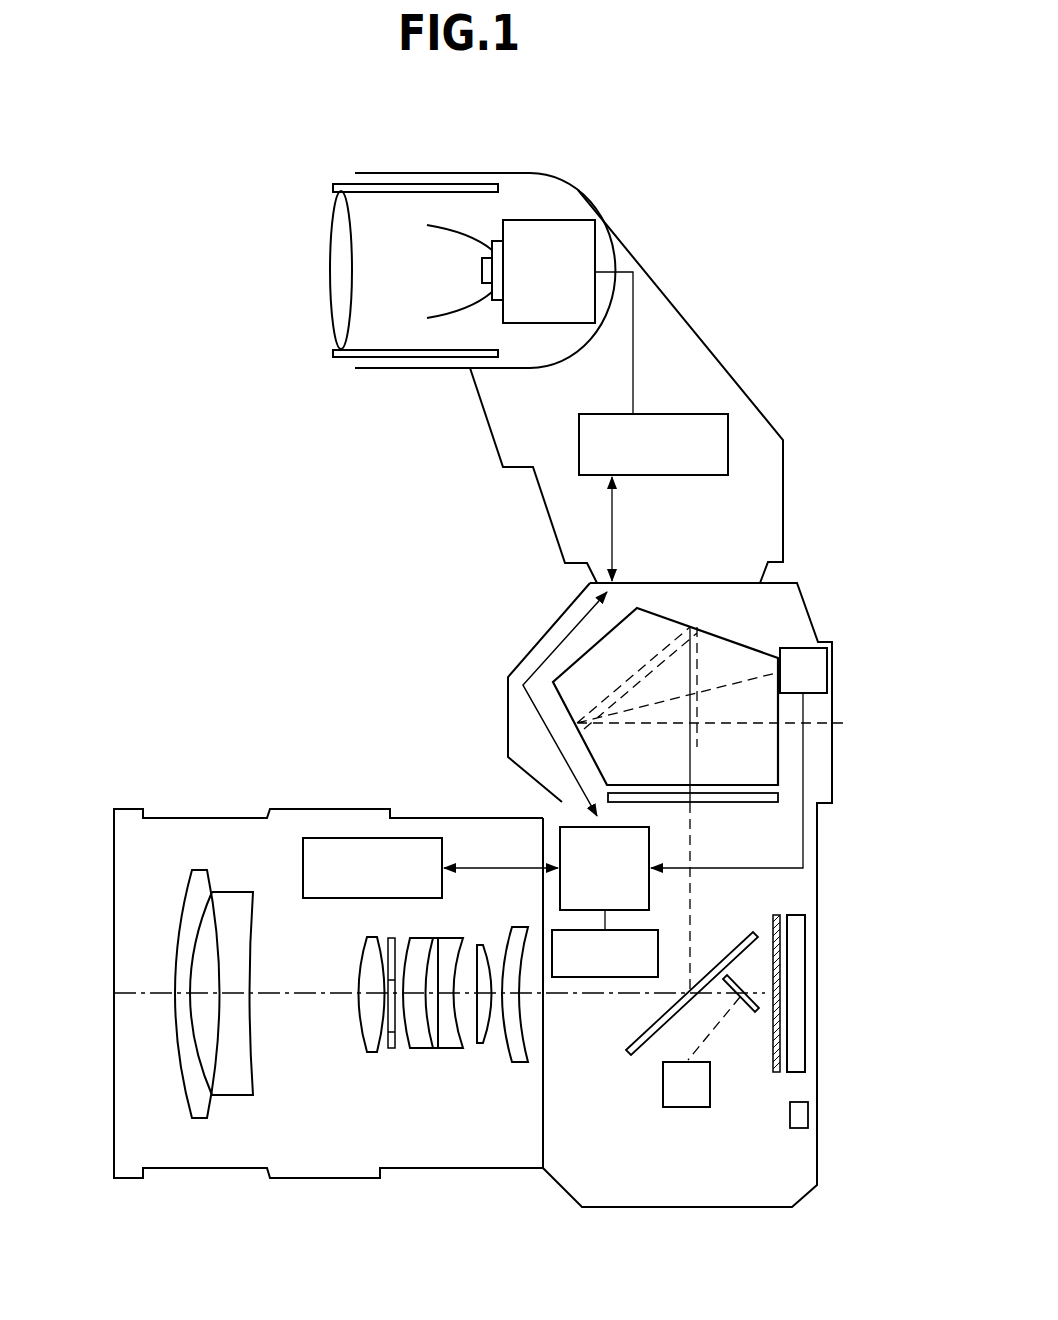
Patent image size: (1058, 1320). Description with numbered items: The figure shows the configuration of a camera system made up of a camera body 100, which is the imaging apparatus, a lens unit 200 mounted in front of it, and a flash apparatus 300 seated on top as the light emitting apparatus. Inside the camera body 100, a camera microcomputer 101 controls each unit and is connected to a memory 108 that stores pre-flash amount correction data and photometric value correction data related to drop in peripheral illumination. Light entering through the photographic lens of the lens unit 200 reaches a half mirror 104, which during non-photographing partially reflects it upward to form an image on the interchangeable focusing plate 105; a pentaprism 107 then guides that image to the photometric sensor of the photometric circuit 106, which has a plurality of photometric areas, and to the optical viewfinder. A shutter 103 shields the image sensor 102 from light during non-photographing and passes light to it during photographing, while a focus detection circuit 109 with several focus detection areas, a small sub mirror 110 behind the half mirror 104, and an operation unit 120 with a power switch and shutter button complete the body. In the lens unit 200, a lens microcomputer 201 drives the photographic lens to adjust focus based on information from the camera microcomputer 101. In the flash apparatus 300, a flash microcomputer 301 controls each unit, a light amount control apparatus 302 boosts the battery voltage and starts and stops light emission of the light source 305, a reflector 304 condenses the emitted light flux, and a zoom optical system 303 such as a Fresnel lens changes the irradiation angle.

The camera body 100 is at (508, 918).
The camera microcomputer 101 is at (573, 823).
The image sensor 102 is at (797, 988).
The shutter 103 is at (777, 920).
The half mirror 104 is at (750, 932).
The focusing plate 105 is at (778, 798).
The photometric circuit 106 is at (827, 668).
The pentaprism 107 is at (590, 677).
The memory 108 is at (605, 977).
The focus detection circuit 109 is at (710, 1080).
The sub mirror 110 is at (743, 977).
The operation unit 120 is at (800, 1115).
The lens unit 200 is at (296, 971).
The lens microcomputer 201 is at (375, 838).
The flash apparatus 300 is at (561, 329).
The flash microcomputer 301 is at (579, 440).
The light amount control apparatus 302 is at (567, 219).
The zoom optical system 303 is at (342, 310).
The reflector 304 is at (463, 232).
The light source 305 is at (482, 271).